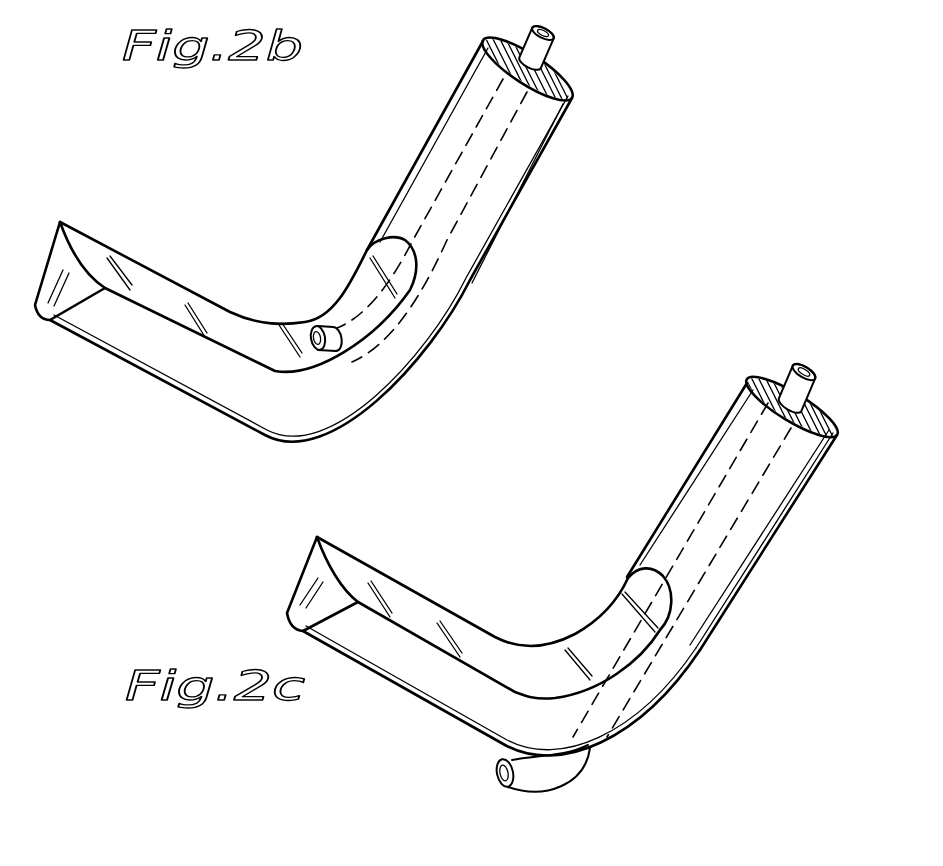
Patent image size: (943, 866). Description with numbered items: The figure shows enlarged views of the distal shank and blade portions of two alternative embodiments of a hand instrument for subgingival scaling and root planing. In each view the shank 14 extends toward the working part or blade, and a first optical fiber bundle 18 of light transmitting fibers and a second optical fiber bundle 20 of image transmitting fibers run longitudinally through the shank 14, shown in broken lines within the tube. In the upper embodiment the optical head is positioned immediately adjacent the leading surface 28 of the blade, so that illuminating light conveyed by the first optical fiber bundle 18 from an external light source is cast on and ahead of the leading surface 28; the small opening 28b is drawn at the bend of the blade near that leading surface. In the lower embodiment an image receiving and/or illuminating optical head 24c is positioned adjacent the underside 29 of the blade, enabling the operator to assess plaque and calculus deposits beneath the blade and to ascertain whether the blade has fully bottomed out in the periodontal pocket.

In FIG. 2C, the shank 14 is at (750, 527).
In FIG. 2B, the first optical fiber bundle 18 is at (608, 44).
In FIG. 2C, the first optical fiber bundle 18 is at (791, 353).
In FIG. 2B, the second optical fiber bundle 20 is at (556, 53).
In FIG. 2C, the second optical fiber bundle 20 is at (793, 363).
In FIG. 2B, the leading surface 28 is at (123, 266).
In FIG. 2B, the side port 28b is at (316, 326).
In FIG. 2C, the underside 29 is at (396, 694).
In FIG. 2C, the optical head 24c is at (495, 779).